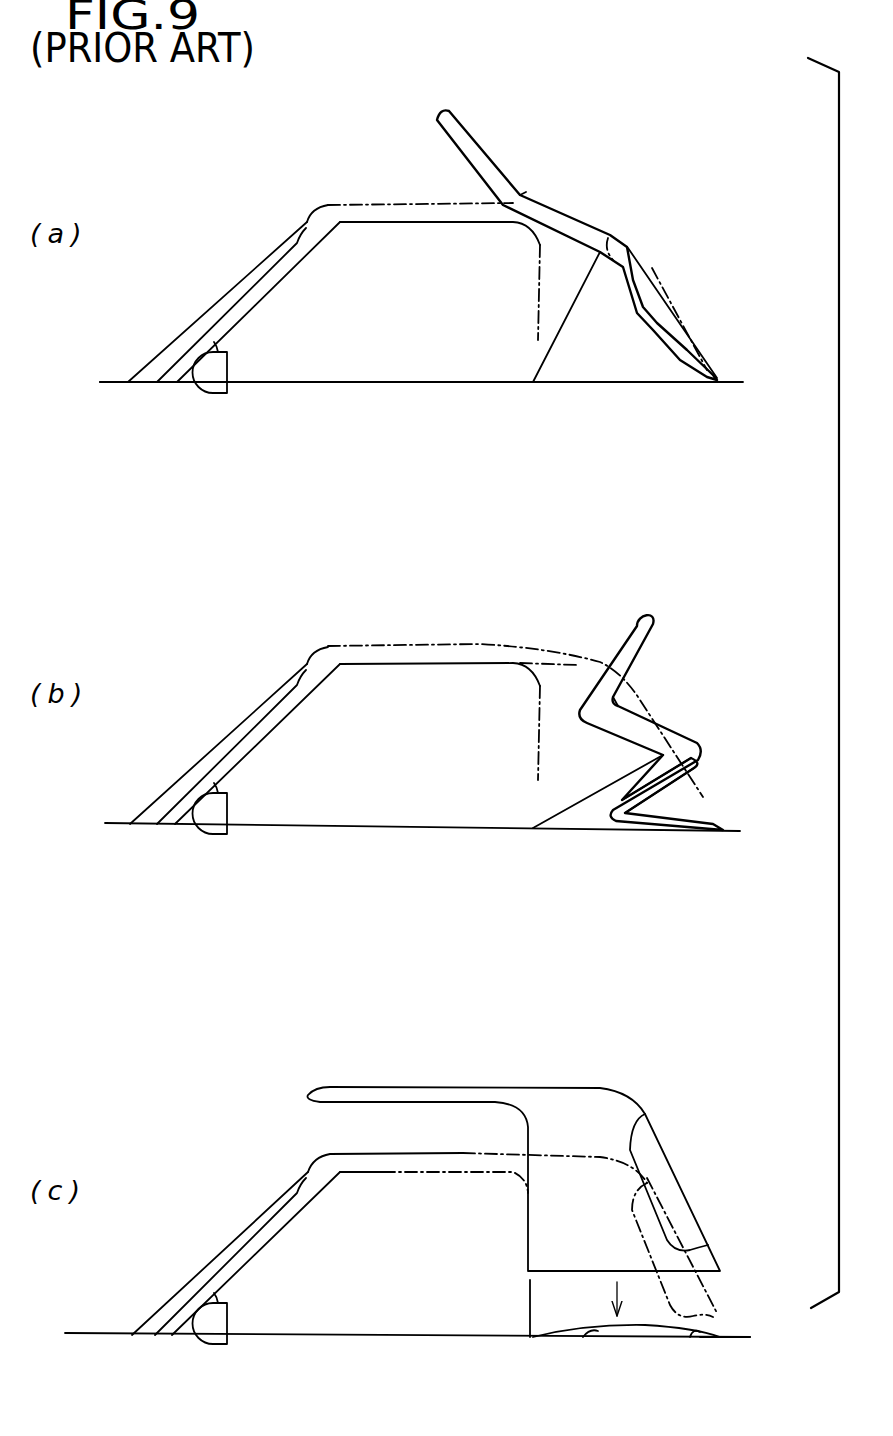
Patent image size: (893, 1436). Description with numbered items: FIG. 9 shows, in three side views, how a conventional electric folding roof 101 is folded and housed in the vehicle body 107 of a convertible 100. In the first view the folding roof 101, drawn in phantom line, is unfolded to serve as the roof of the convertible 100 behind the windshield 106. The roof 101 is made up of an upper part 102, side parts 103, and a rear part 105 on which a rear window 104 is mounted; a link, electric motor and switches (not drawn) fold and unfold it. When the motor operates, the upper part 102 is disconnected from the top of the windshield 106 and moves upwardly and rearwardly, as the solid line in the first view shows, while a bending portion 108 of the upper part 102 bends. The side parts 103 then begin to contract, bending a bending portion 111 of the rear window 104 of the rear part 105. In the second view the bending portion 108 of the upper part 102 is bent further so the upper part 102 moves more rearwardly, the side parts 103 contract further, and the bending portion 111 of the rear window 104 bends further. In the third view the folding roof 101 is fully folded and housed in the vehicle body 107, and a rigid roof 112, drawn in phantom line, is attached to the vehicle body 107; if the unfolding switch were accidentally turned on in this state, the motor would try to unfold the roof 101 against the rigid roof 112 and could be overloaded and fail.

The convertible 100 is at (188, 248).
The electric folding roof 101 is at (383, 198).
The upper part 102 is at (415, 198).
The side parts 103 is at (537, 323).
The rear window 104 is at (677, 317).
The rear part 105 is at (633, 253).
The windshield 106 is at (262, 251).
The vehicle body 107 is at (117, 380).
The bending portion 108 is at (530, 193).
The bending portion 111 is at (645, 310).
The rigid roof 112 is at (470, 1083).